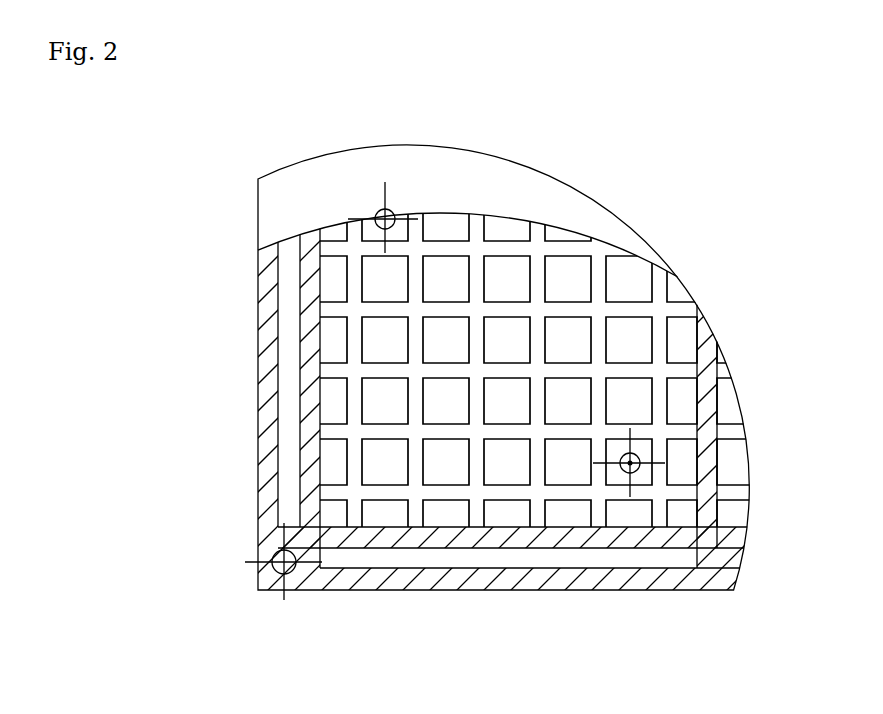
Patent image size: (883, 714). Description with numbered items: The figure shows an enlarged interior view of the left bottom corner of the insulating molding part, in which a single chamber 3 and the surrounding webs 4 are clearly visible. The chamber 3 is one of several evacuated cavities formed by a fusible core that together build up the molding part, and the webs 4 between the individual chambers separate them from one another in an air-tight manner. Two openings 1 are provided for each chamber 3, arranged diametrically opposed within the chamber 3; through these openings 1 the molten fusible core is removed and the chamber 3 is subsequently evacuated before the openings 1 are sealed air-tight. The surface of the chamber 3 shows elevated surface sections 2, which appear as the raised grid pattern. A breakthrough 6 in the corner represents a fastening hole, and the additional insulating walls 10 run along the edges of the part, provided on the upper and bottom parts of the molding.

The openings 1 is at (631, 462).
The elevated surface sections 2 is at (414, 372).
The chamber 3 is at (691, 273).
The webs 4 is at (705, 470).
The breakthroughs 6 is at (268, 551).
The insulating walls 10 is at (288, 394).